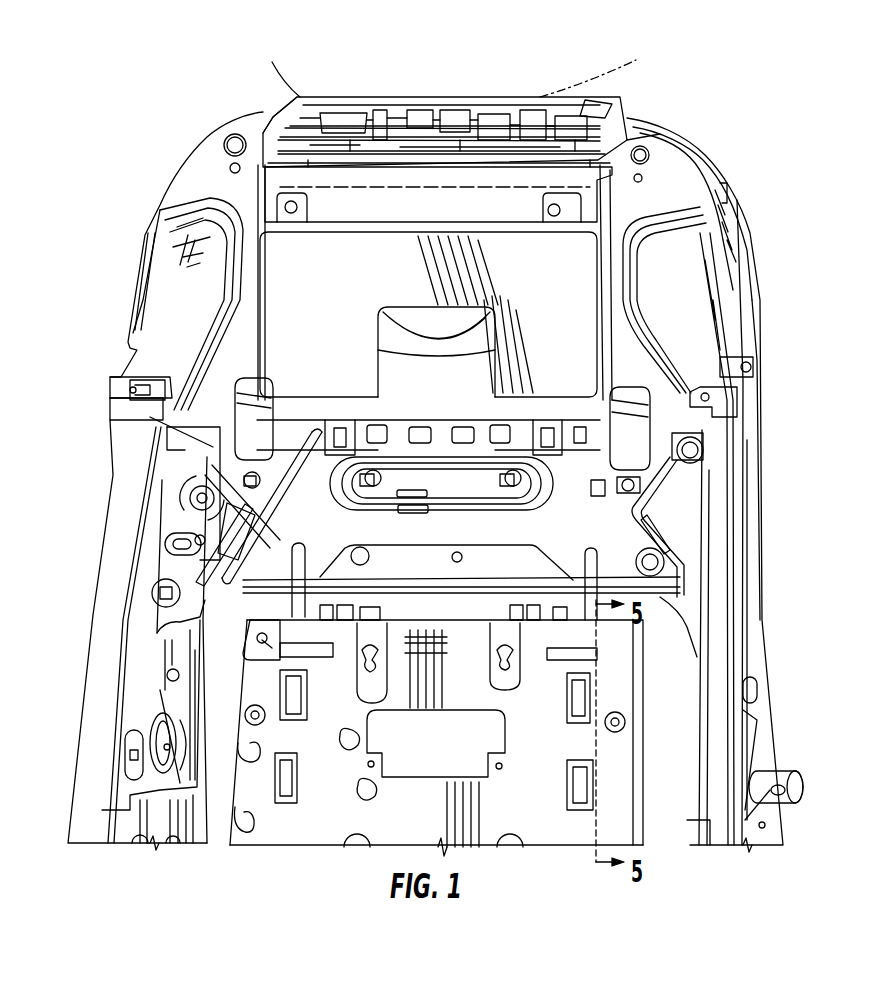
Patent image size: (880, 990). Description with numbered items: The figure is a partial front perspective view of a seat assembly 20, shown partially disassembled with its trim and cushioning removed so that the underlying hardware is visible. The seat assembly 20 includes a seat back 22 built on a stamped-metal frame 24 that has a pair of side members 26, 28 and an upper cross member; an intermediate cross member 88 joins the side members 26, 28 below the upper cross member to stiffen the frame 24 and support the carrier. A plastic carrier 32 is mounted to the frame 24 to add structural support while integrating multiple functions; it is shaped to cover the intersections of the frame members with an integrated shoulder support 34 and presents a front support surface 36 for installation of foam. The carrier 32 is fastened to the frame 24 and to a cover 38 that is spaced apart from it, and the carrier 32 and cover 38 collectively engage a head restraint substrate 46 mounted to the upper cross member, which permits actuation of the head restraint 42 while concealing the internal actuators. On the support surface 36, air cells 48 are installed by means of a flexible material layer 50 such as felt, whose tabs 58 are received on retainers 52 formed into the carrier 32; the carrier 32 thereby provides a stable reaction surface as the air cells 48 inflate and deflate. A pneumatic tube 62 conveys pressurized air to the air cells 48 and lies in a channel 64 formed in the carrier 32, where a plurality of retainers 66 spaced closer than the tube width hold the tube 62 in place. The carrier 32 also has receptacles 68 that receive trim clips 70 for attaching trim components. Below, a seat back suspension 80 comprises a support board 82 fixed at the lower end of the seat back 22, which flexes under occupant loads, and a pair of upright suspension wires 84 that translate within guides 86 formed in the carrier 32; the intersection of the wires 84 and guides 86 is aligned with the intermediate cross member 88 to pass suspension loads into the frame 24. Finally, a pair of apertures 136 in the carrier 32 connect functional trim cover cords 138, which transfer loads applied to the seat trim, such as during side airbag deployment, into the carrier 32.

The seat assembly 20 is at (303, 52).
The seat back 22 is at (524, 90).
The frame 24 is at (754, 758).
The side member 26 is at (108, 624).
The side member 28 is at (750, 688).
The carrier 32 is at (705, 262).
The shoulder support 34 is at (212, 176).
The support surface 36 is at (292, 455).
The cover 38 is at (757, 300).
The head restraint 42 is at (272, 63).
The head restraint substrate 46 is at (612, 104).
The air cells 48 is at (310, 303).
The flexible material layer 50 is at (262, 224).
The retainers 52 is at (560, 208).
The tabs 58 is at (648, 150).
The pneumatic tube 62 is at (185, 545).
The channel 64 is at (240, 520).
The retainers 66 is at (248, 488).
The receptacles 68 is at (616, 497).
The trim clips 70 is at (618, 486).
The seat back suspension 80 is at (236, 766).
The support board 82 is at (255, 838).
The suspension wires 84 is at (295, 607).
The guides 86 is at (632, 578).
The intermediate cross member 88 is at (650, 593).
The apertures 136 is at (660, 510).
The trim cover cords 138 is at (670, 530).